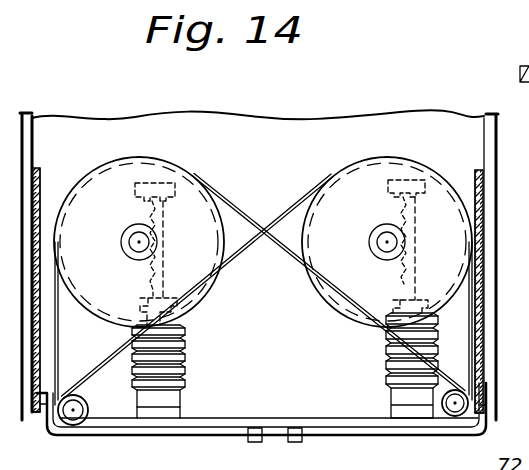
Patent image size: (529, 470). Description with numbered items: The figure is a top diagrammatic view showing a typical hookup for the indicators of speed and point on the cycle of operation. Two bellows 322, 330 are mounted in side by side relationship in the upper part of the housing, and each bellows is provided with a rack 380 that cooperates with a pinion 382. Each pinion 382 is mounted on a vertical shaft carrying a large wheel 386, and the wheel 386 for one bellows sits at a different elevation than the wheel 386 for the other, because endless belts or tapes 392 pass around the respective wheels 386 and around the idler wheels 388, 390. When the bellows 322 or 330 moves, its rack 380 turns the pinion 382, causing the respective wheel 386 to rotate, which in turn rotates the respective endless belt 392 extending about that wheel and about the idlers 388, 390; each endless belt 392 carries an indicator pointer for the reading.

The endless belt 392 is at (282, 217).
The pinion 382 is at (381, 229).
The large wheel 386 is at (405, 235).
The rack 380 is at (415, 276).
The bellows 330 is at (188, 348).
The bellows 322 is at (383, 362).
The idler wheel 388 is at (88, 402).
The idler wheel 390 is at (388, 404).